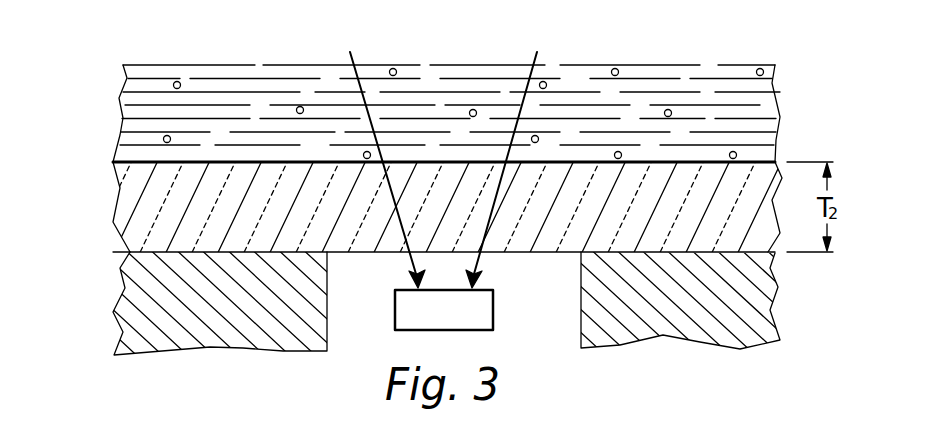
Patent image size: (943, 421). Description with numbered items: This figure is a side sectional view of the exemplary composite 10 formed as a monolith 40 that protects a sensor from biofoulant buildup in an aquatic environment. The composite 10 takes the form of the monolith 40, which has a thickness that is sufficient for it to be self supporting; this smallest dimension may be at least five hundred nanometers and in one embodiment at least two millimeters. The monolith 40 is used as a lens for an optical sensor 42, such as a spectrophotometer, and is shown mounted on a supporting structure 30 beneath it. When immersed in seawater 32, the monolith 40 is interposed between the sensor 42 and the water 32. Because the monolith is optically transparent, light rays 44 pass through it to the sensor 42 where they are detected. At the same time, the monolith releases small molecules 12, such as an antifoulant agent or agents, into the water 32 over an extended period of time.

The composite 10 is at (277, 158).
The small molecules 12 is at (176, 81).
The support base 30 is at (187, 297).
The seawater 32 is at (143, 110).
The monolith 40 is at (200, 208).
The optical sensor 42 is at (494, 310).
The light rays 44 is at (360, 84).